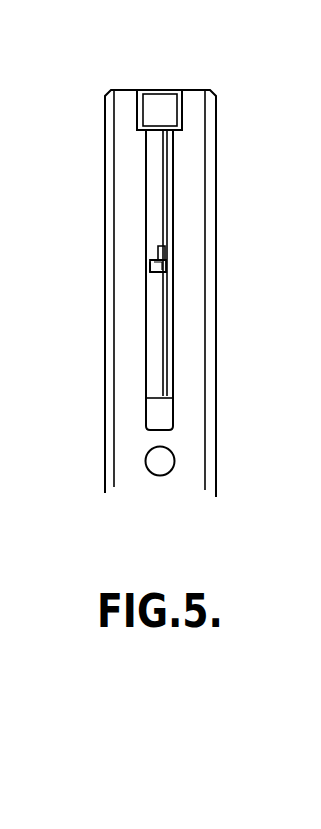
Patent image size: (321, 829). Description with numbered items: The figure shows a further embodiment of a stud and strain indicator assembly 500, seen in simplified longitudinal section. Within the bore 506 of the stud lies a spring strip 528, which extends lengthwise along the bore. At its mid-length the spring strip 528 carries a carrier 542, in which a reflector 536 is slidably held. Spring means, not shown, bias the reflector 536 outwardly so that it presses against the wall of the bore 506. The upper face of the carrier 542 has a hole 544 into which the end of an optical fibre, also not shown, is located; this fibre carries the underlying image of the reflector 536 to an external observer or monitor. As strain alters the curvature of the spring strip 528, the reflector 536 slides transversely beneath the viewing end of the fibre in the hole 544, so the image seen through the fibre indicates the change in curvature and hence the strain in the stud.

The assembly 500 is at (133, 83).
The spring strip 528 is at (170, 186).
The hole 544 is at (157, 245).
The carrier 542 is at (167, 275).
The reflector 536 is at (155, 262).
The bore 506 is at (147, 380).